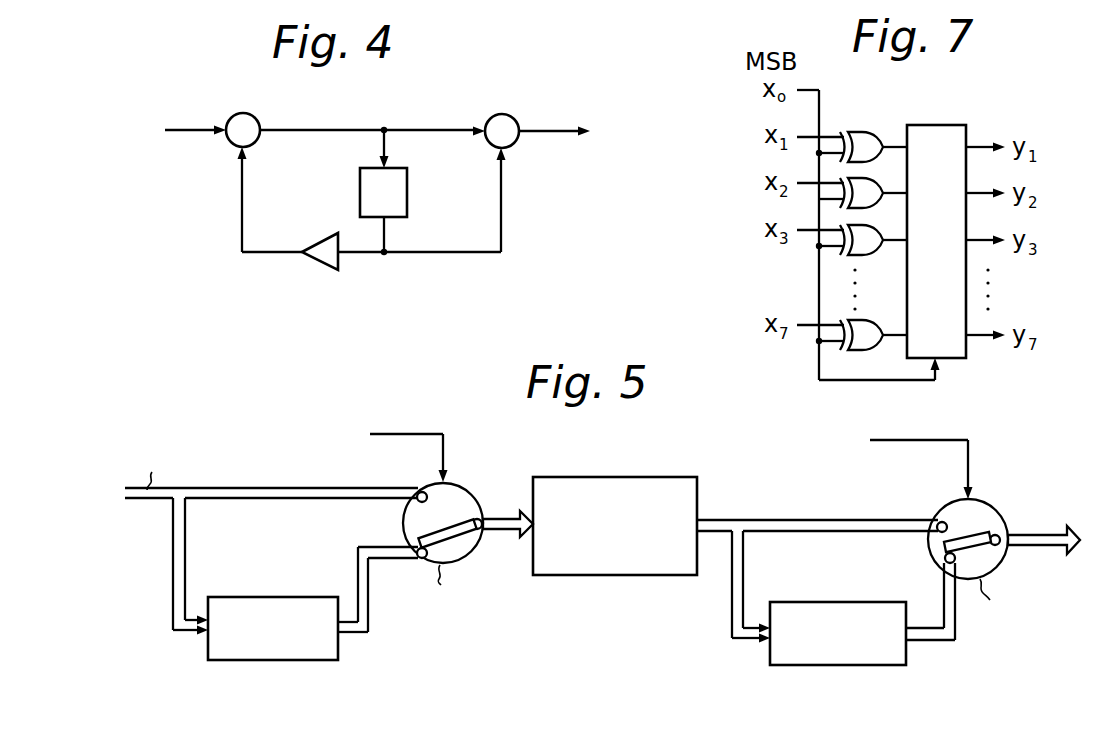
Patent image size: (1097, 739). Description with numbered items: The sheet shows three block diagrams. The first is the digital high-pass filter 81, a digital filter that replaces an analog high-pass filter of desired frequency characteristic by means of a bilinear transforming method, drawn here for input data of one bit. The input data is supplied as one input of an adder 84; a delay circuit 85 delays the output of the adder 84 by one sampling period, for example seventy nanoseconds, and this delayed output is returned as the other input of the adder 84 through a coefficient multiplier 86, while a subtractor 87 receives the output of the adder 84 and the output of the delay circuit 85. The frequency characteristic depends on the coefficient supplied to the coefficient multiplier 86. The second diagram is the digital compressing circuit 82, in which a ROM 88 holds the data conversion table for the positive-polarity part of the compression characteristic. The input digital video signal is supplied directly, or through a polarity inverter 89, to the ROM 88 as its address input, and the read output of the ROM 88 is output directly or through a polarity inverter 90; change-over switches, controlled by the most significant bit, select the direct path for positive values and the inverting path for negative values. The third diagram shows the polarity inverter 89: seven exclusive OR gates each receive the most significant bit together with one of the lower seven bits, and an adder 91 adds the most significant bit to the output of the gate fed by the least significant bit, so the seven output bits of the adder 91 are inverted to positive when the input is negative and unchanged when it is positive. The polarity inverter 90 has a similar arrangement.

In FIG. 4, the digital high-pass filter 81 is at (318, 101).
In FIG. 4, the adder 84 is at (256, 142).
In FIG. 4, the delay circuit 85 is at (407, 183).
In FIG. 4, the coefficient multiplier 86 is at (318, 262).
In FIG. 4, the subtractor 87 is at (515, 143).
In FIG. 5, the digital compressing circuit 82 is at (620, 455).
In FIG. 5, the ROM 88 is at (597, 576).
In FIG. 7, the polarity inverter 89 is at (882, 114).
In FIG. 5, the polarity inverter 89 is at (338, 648).
In FIG. 5, the polarity inverter 90 is at (906, 655).
In FIG. 7, the adder 91 is at (937, 125).